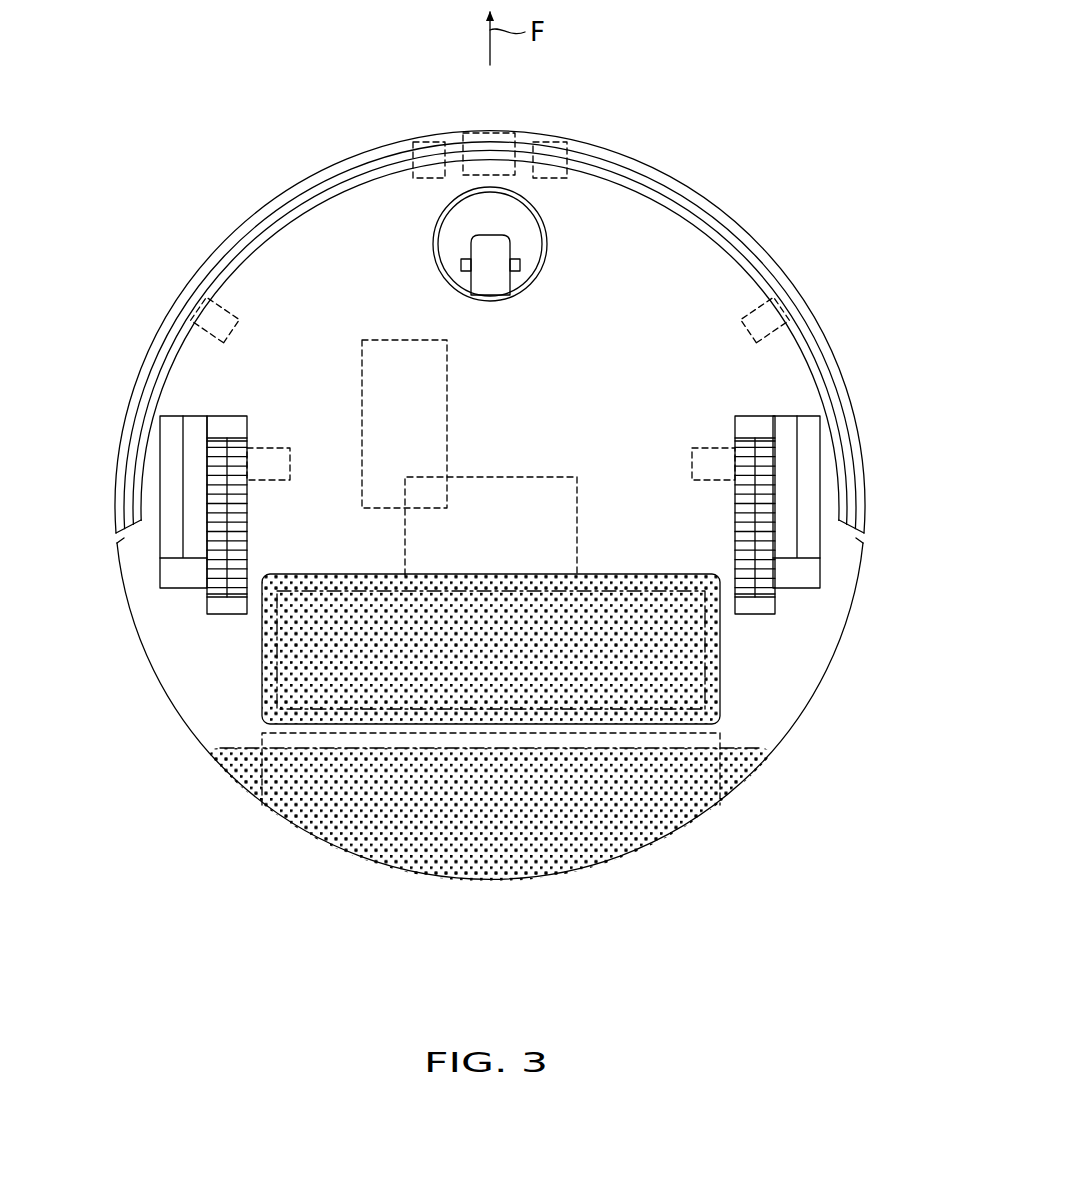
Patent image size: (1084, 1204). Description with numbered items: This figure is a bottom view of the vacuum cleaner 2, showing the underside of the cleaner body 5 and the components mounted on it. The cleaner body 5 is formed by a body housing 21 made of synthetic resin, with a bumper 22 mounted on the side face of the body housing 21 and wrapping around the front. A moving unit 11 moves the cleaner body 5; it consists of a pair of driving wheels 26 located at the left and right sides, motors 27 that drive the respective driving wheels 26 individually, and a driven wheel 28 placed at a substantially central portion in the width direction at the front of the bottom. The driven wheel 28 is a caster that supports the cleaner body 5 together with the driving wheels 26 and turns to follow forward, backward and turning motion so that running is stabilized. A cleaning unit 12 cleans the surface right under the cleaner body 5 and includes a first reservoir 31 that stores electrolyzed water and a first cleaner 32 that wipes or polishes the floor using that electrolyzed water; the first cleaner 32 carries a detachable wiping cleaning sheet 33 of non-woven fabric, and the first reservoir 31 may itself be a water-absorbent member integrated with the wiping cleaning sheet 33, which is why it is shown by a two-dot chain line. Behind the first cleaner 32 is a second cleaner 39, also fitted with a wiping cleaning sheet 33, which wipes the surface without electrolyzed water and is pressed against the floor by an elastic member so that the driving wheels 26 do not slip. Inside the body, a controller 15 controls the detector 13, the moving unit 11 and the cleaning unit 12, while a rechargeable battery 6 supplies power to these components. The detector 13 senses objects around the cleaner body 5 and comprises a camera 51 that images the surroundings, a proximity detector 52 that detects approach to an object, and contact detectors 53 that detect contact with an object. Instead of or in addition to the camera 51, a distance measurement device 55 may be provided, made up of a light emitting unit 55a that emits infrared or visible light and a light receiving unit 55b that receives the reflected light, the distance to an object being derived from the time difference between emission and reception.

The vacuum cleaner 2 is at (680, 105).
The cleaner body 5 is at (161, 718).
The rechargeable battery 6 is at (405, 340).
The moving unit 11 is at (802, 400).
The cleaning unit 12 is at (248, 666).
The detector 13 is at (563, 130).
The controller 15 is at (465, 477).
The body housing 21 is at (800, 722).
The bumper 22 is at (272, 203).
The driving wheels 26 is at (222, 472).
The motors 27 is at (268, 448).
The driven wheel 28 is at (512, 257).
The first reservoir 31 is at (705, 624).
The first cleaner 32 is at (722, 686).
The wiping cleaning sheet 33 is at (491, 649).
The second cleaner 39 is at (610, 830).
The camera 51 is at (418, 178).
The proximity detector 52 is at (523, 172).
The contact detector 53 is at (190, 333).
The distance measurement device 55 is at (490, 160).
The light emitting unit 55a is at (550, 160).
The light receiving unit 55b is at (429, 160).